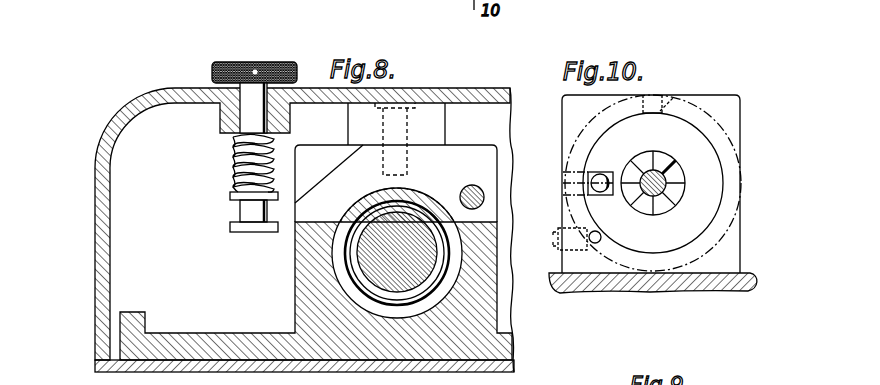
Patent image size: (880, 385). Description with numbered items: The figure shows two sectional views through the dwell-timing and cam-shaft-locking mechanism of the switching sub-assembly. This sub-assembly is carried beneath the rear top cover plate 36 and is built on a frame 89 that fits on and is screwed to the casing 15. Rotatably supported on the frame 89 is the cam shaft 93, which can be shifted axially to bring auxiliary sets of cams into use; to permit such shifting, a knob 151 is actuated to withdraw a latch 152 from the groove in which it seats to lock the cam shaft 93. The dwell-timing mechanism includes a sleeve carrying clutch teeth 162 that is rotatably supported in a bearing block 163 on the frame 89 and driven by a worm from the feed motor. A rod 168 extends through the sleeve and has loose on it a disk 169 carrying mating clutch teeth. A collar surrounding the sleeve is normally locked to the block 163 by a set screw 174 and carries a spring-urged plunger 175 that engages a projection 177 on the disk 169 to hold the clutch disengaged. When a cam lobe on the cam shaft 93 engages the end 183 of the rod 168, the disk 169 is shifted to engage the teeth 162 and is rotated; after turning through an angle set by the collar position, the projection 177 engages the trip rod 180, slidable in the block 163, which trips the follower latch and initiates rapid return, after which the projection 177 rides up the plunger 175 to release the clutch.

In FIG. 8, the rear top cover plate 36 is at (100, 206).
In FIG. 8, the knob 151 is at (228, 62).
In FIG. 8, the latch 152 is at (448, 158).
In FIG. 8, the frame 89 is at (226, 333).
In FIG. 8, the cam shaft 93 is at (373, 277).
In FIG. 10, the bearing block 163 is at (733, 106).
In FIG. 10, the disk 169 is at (732, 134).
In FIG. 10, the clutch teeth 162 is at (678, 197).
In FIG. 10, the rod 168 is at (667, 178).
In FIG. 10, the set screw 174 is at (667, 101).
In FIG. 10, the plunger 175 is at (600, 195).
In FIG. 10, the projection 177 is at (598, 174).
In FIG. 10, the trip rod 180 is at (601, 237).
In FIG. 10, the end of the rod 183 is at (570, 252).
In FIG. 10, the casing 15 is at (748, 277).